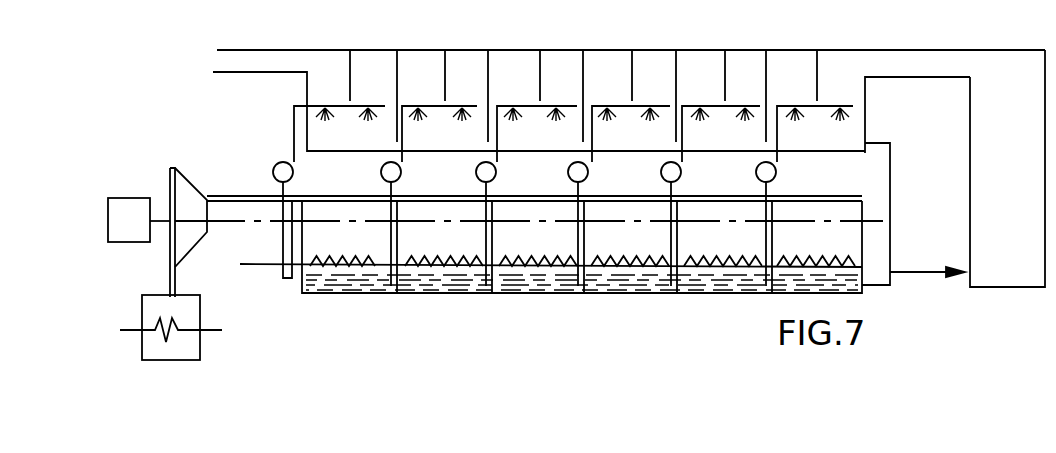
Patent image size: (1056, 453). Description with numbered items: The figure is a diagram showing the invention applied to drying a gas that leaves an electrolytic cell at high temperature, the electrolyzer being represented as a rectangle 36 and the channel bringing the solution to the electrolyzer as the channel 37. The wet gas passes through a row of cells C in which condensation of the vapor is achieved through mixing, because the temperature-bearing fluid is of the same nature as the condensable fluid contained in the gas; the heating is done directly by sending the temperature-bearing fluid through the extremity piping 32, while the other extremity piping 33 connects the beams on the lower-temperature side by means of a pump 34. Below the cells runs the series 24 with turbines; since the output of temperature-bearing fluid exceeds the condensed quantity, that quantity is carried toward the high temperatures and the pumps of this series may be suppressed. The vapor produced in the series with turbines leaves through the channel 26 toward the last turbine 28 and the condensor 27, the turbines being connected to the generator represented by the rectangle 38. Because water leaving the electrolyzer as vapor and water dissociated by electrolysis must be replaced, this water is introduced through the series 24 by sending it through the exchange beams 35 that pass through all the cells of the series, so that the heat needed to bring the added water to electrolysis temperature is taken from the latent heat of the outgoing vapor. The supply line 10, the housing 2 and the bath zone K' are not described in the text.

The supply line 10 is at (237, 56).
The cells C is at (646, 46).
The housing 2 is at (901, 76).
The electrolyzer 36 is at (997, 268).
The extremity piping 32 is at (892, 237).
The pump 34 is at (273, 168).
The extremity piping 33 is at (289, 280).
The channel 26 is at (237, 195).
The last turbine 28 is at (188, 187).
The generator 38 is at (130, 207).
The condensor 27 is at (200, 342).
The series with turbines 24 is at (723, 294).
The channel 37 is at (262, 261).
The exchange beams 35 is at (640, 294).
The treatment bath K' is at (582, 316).